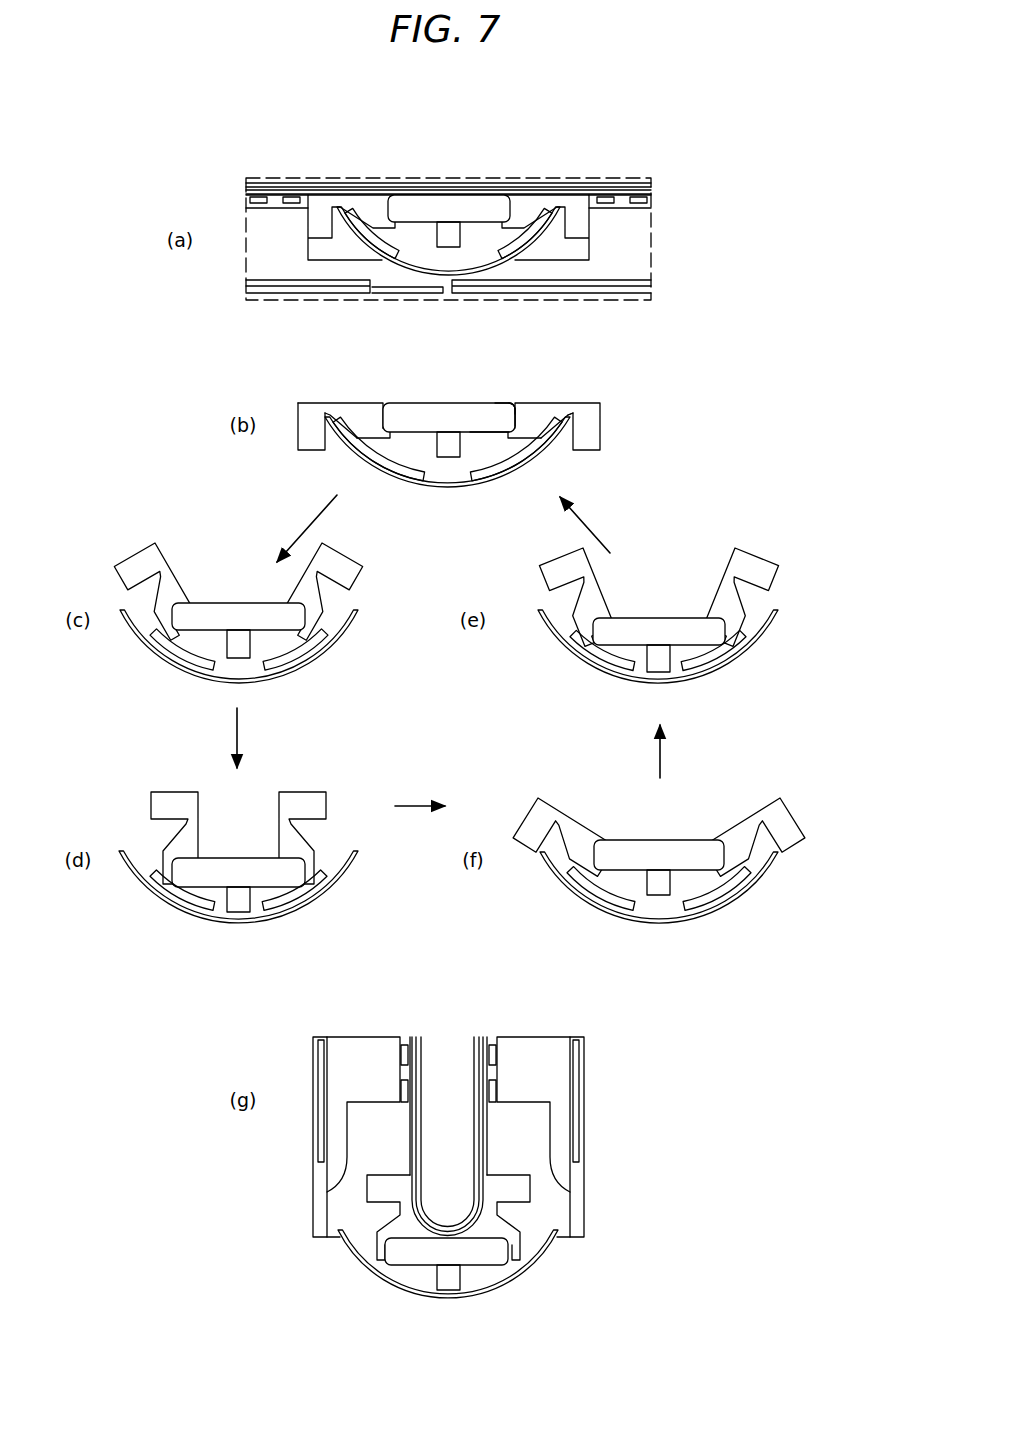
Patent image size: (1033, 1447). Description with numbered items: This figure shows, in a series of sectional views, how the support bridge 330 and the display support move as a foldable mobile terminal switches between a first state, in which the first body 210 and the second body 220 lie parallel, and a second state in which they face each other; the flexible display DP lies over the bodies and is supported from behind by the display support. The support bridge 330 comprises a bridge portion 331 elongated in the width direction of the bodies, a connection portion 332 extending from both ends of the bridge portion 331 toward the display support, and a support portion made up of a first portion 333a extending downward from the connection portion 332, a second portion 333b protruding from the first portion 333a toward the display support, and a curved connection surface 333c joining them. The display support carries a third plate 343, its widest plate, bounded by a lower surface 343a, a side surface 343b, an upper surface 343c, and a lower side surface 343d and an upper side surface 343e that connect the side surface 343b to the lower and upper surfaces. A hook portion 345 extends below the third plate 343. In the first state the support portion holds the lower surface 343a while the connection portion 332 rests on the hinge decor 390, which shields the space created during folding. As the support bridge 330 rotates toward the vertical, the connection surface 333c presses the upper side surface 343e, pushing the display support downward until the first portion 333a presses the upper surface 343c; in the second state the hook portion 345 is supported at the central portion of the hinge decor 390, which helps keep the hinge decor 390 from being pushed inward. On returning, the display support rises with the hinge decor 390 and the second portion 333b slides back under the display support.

The first body 210 is at (640, 247).
The second body 220 is at (258, 258).
The display panel DP is at (275, 184).
The support bridge 330 is at (440, 695).
The bridge portion 331 is at (305, 437).
The connection portion 332 is at (330, 408).
The first portion 333a is at (357, 420).
The second portion 333b is at (355, 462).
The connection surface 333c is at (372, 428).
The third plate 343 is at (448, 740).
The lower surface 343a is at (488, 433).
The side surface 343b is at (515, 420).
The upper surface 343c is at (487, 408).
The lower side surface 343d is at (540, 447).
The upper side surface 343e is at (508, 405).
The hook portion 345 is at (455, 238).
The hinge decor 390 is at (448, 779).